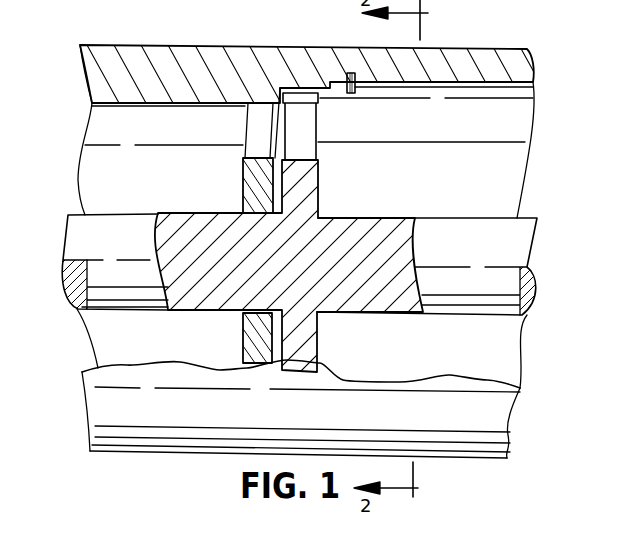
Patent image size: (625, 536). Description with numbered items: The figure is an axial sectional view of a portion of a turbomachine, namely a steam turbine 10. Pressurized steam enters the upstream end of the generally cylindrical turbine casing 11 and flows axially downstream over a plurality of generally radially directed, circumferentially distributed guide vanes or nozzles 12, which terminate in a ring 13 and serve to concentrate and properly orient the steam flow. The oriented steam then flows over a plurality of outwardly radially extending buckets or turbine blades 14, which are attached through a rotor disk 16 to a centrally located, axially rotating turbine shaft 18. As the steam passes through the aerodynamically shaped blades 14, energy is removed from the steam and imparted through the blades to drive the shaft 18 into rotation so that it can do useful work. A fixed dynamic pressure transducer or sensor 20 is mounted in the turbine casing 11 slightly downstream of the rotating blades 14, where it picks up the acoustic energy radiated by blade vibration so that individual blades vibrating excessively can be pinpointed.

The steam turbine 10 is at (499, 40).
The turbine casing 11 is at (460, 55).
The guide vanes or nozzles 12 is at (247, 128).
The ring 13 is at (245, 193).
The turbine blades 14 is at (318, 130).
The rotor disk 16 is at (318, 192).
The turbine shaft 18 is at (523, 226).
The dynamic pressure transducer or sensor 20 is at (350, 70).